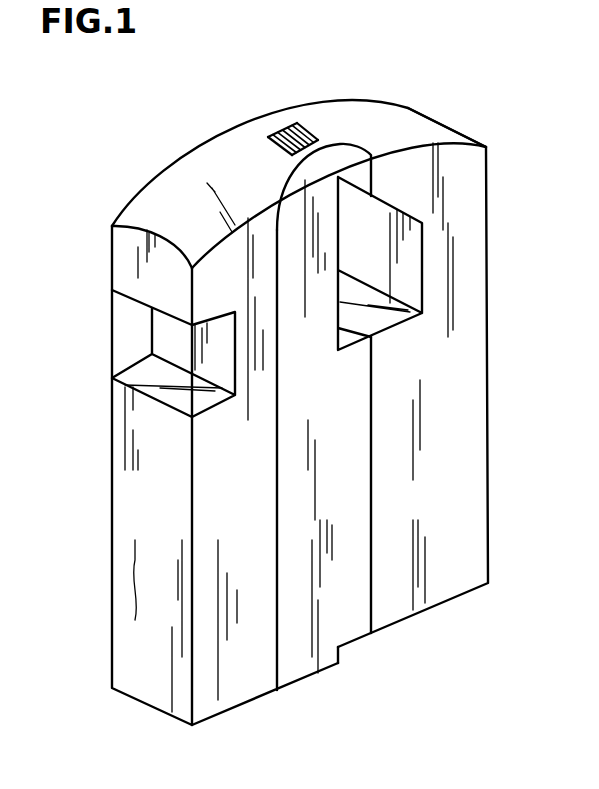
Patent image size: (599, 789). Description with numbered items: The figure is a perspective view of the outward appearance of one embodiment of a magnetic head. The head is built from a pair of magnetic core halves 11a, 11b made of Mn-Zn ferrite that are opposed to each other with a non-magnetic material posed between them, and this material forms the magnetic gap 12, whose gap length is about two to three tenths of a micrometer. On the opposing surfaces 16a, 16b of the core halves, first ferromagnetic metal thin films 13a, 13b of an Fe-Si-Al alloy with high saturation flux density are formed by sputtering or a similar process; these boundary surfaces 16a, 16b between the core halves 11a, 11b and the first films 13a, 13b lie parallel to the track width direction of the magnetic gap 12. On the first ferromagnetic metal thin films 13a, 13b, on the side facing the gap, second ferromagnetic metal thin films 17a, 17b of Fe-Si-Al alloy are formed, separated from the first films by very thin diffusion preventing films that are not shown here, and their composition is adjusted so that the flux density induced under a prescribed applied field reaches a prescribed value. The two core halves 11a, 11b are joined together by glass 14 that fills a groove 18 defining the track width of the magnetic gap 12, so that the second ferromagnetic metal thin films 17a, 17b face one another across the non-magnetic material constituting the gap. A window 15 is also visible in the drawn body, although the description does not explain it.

The magnetic core half 11a is at (163, 690).
The magnetic core half 11b is at (433, 578).
The magnetic gap 12 is at (268, 136).
The first ferromagnetic metal thin film 13a is at (268, 137).
The first ferromagnetic metal thin film 13b is at (318, 138).
The glass 14 is at (233, 133).
The winding window 15 is at (410, 270).
The opposing surface 16a is at (290, 156).
The opposing surface 16b is at (322, 150).
The second ferromagnetic metal thin film 17a is at (213, 138).
The second ferromagnetic metal thin film 17b is at (297, 123).
The groove 18 is at (248, 135).